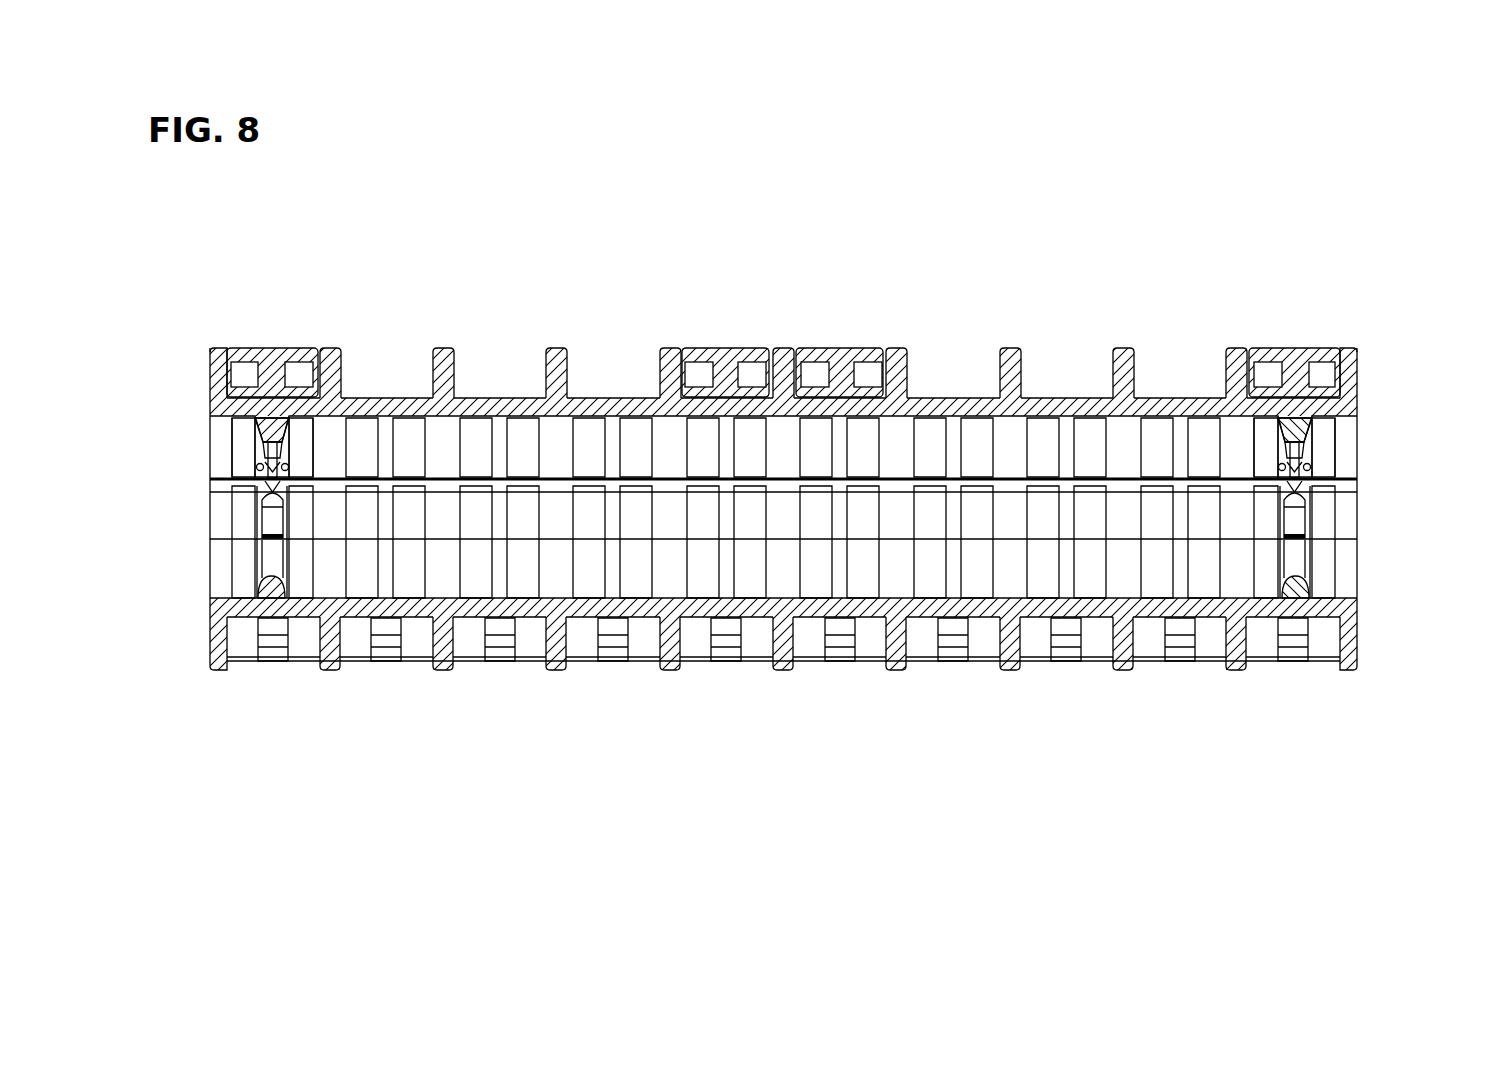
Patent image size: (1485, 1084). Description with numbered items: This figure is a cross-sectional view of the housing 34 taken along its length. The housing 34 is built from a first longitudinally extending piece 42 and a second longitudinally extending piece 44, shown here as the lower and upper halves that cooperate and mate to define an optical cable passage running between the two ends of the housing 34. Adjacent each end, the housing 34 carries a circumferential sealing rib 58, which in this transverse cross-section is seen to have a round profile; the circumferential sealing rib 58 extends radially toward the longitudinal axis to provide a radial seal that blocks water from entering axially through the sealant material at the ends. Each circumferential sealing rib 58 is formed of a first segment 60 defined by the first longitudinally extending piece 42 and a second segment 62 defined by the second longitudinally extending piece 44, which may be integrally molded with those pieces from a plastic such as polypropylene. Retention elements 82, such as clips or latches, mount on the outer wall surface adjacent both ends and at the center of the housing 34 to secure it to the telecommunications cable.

The housing 34 is at (1197, 252).
The first longitudinally extending piece 42 is at (1028, 672).
The second longitudinally extending piece 44 is at (1027, 366).
The circumferential sealing rib 58 is at (247, 452).
The first segment 60 is at (253, 515).
The second segment 62 is at (293, 442).
The retention elements 82 is at (277, 348).